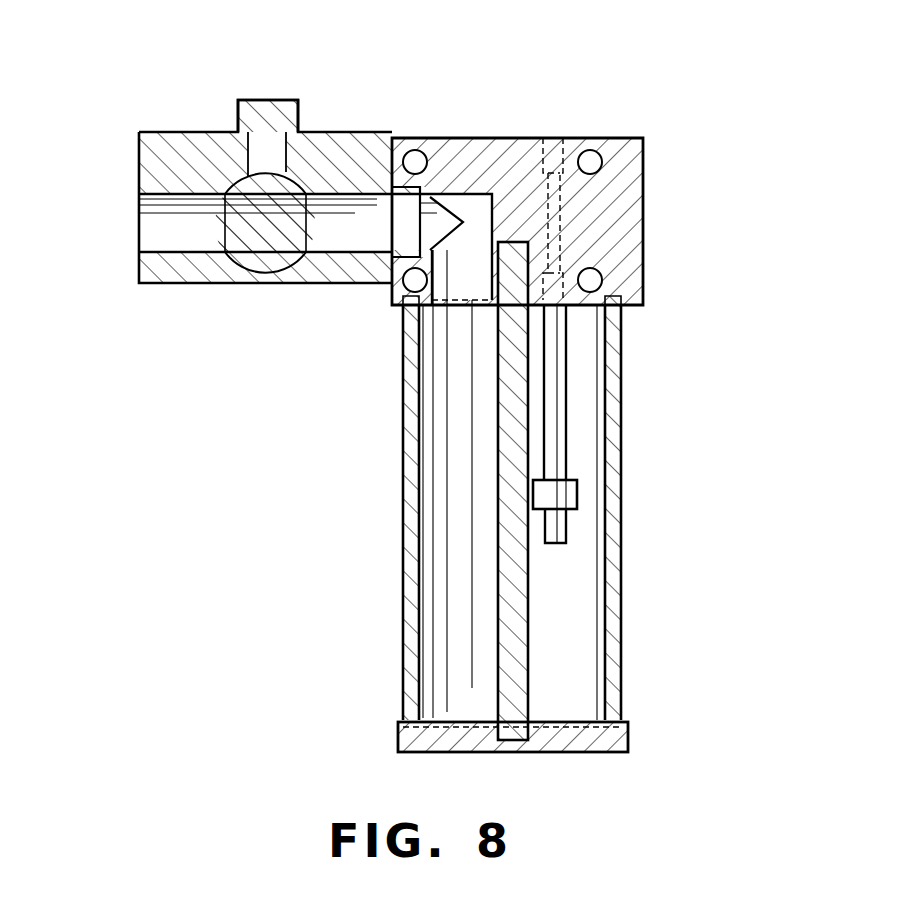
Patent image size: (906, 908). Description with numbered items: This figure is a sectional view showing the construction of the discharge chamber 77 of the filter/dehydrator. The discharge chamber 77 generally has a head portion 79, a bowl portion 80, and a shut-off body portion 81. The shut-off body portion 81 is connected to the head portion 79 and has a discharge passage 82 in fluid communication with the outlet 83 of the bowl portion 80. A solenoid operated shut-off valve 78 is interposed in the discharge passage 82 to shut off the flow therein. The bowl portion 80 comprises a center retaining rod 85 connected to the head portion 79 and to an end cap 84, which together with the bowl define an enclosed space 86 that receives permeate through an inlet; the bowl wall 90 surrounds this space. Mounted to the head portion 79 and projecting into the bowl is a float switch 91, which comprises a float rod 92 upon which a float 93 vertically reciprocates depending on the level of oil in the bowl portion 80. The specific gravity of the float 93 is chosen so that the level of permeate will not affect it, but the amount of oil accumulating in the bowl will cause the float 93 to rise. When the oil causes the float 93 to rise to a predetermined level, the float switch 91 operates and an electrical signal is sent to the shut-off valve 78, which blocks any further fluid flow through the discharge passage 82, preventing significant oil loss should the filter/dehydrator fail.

The discharge chamber 77 is at (439, 420).
The solenoid operated shut-off valve 78 is at (267, 100).
The head portion 79 is at (608, 138).
The bowl portion 80 is at (623, 635).
The shut-off body portion 81 is at (220, 284).
The discharge passage 82 is at (162, 195).
The outlet 83 is at (464, 232).
The end cap 84 is at (572, 745).
The center retaining rod 85 is at (500, 440).
The enclosed space 86 is at (450, 590).
The cylinder wall liner 90 is at (613, 392).
The float switch 91 is at (571, 373).
The float rod 92 is at (556, 443).
The float 93 is at (579, 500).